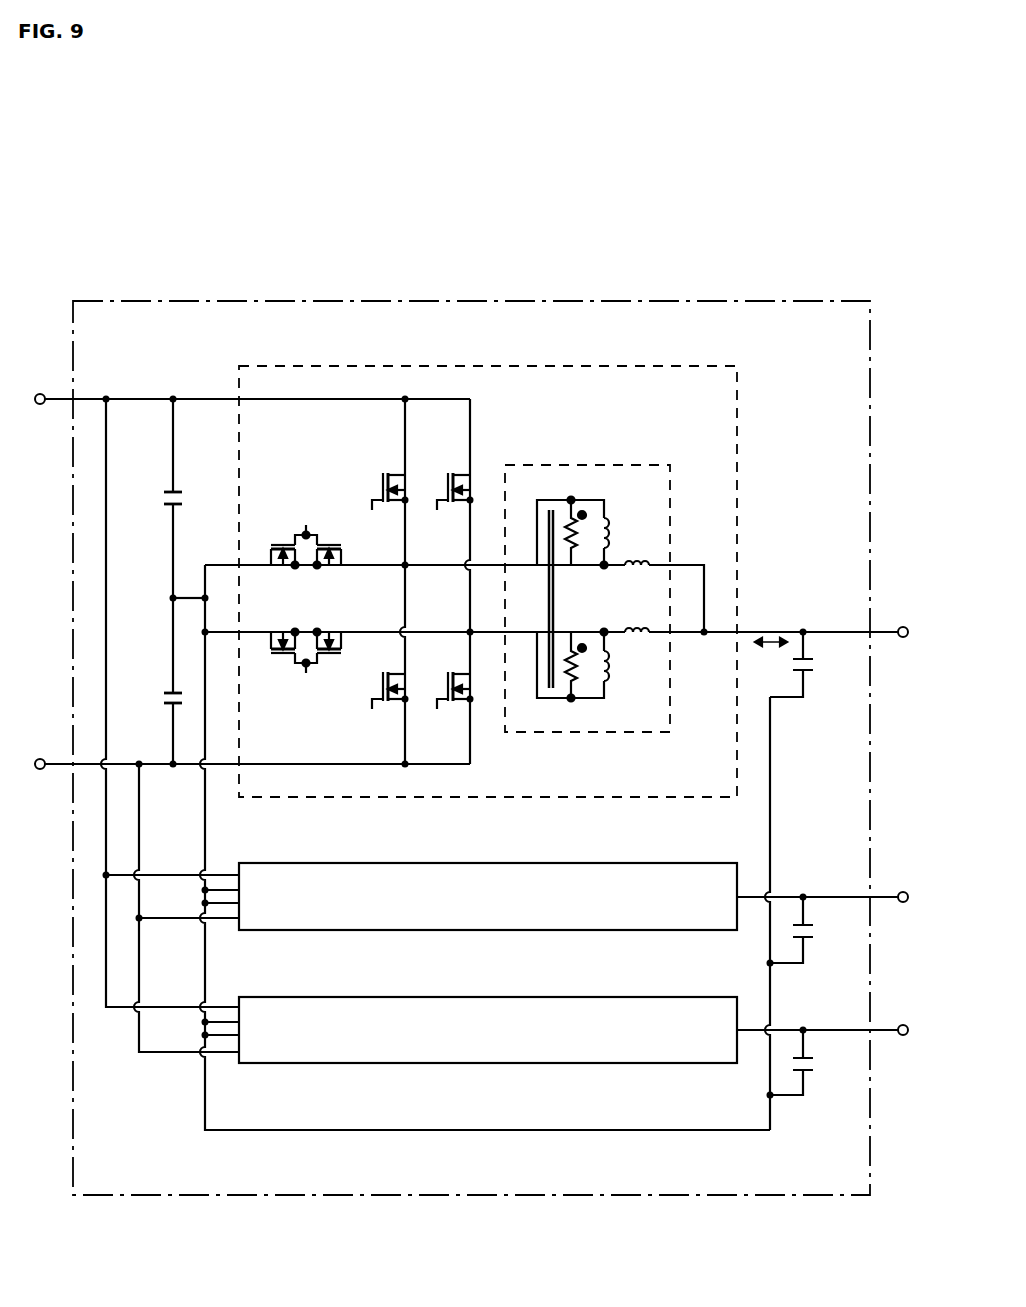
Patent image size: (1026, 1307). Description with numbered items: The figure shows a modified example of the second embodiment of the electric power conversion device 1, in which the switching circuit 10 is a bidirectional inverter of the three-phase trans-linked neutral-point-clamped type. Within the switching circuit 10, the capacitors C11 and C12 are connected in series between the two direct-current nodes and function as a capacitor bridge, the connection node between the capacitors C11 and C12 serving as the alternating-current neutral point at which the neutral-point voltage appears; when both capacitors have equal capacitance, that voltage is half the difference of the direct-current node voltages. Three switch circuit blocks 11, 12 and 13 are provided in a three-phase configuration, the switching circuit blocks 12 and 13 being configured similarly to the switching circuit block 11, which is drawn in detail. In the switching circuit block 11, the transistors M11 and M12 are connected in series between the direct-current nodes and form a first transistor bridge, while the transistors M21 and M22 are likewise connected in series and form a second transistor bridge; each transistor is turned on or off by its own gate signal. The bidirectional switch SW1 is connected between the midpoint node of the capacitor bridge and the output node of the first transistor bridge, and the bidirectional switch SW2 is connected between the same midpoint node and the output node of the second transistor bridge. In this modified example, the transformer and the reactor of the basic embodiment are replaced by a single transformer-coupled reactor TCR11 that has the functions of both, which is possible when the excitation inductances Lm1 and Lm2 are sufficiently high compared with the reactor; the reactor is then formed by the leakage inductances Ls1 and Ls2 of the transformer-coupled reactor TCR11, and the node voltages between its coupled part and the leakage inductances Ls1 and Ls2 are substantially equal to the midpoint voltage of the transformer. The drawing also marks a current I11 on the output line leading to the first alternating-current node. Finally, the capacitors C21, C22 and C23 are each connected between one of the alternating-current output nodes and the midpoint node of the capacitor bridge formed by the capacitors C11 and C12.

The electric power conversion device 1 is at (41, 234).
The switching circuit 10 is at (472, 302).
The switching circuit block 11 is at (472, 368).
The switching circuit block 12 is at (472, 864).
The switching circuit block 13 is at (472, 998).
The capacitor C11 is at (165, 500).
The capacitor C12 is at (165, 699).
The capacitor C21 is at (815, 664).
The capacitor C22 is at (815, 931).
The capacitor C23 is at (815, 1064).
The transistor M11 is at (393, 473).
The transistor M12 is at (393, 672).
The transistor M21 is at (458, 473).
The transistor M22 is at (458, 672).
The bidirectional switch SW1 is at (347, 572).
The bidirectional switch SW2 is at (262, 625).
The transformer-coupled reactor TCR11 is at (701, 582).
The excitation inductance Lm1 is at (612, 532).
The excitation inductance Lm2 is at (612, 665).
The leakage inductance Ls1 is at (637, 569).
The leakage inductance Ls2 is at (637, 614).
The output current I11 is at (769, 654).